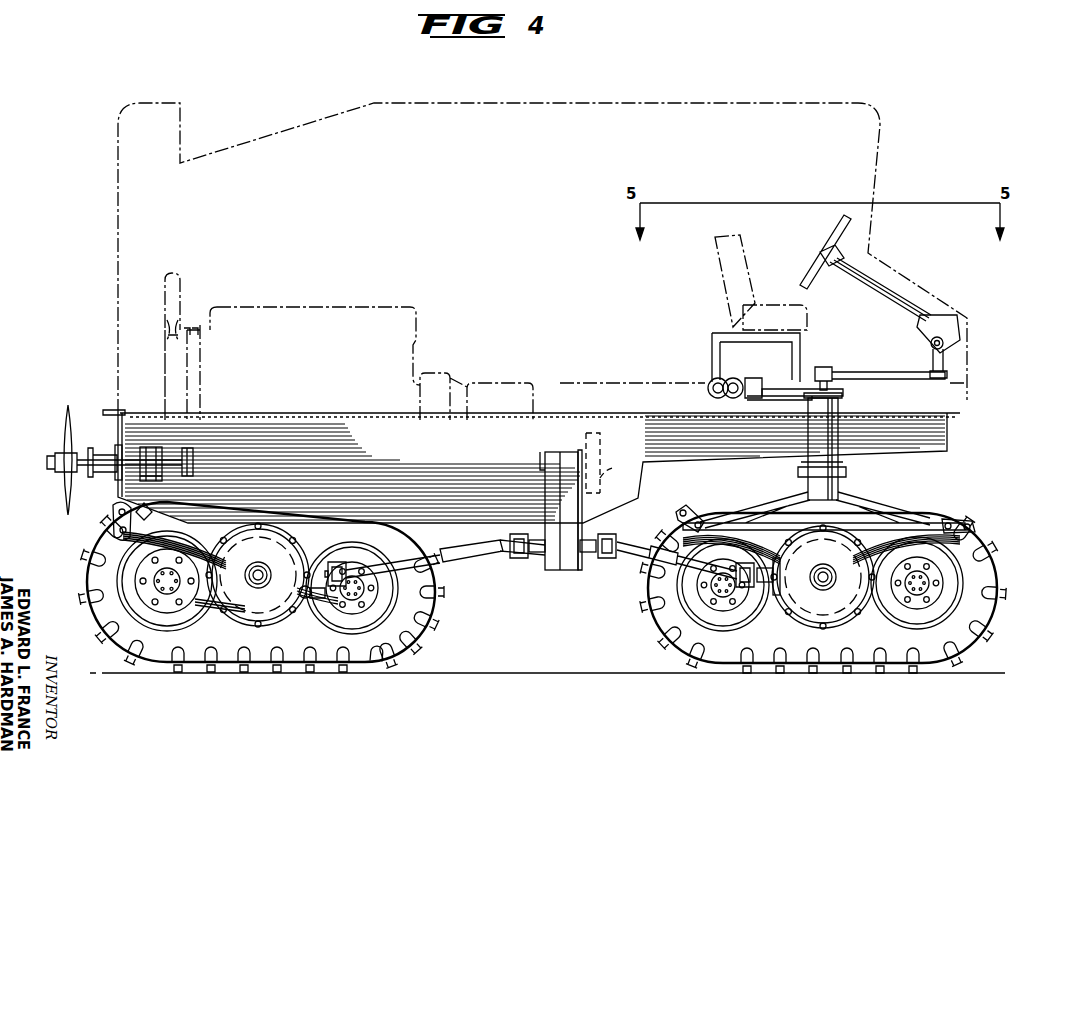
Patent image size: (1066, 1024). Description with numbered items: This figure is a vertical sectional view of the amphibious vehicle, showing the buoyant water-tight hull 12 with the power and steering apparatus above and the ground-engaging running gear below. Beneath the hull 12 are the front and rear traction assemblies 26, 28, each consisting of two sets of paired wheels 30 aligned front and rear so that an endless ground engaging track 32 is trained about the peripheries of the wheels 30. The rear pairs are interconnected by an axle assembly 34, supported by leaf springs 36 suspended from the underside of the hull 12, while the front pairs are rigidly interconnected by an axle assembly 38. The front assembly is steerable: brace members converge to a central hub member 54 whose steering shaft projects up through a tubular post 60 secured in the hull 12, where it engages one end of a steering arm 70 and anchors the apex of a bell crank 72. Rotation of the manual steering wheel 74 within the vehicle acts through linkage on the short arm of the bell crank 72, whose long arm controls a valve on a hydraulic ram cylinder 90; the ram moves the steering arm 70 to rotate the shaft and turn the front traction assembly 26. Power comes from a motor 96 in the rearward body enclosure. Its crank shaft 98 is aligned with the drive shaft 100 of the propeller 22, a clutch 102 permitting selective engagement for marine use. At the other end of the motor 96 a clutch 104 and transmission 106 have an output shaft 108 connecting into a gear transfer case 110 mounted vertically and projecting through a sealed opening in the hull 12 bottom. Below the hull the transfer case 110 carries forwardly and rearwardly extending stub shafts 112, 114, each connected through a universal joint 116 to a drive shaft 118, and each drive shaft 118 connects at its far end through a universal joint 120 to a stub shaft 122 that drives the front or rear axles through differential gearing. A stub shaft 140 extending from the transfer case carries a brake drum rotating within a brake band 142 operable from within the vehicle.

The hull 12 is at (940, 441).
The propeller 22 is at (62, 490).
The front traction assembly 26 is at (854, 585).
The rear traction assembly 28 is at (396, 600).
The wheels 30 is at (400, 643).
The endless ground engaging track 32 is at (88, 611).
The axle assembly 34 is at (258, 578).
The leaf springs 36 is at (100, 538).
The axle assembly 38 is at (815, 598).
The central hub member 54 is at (825, 493).
The tubular post 60 is at (822, 419).
The steering arm 70 is at (777, 398).
The bell crank 72 is at (771, 382).
The manual steering wheel 74 is at (831, 236).
The hydraulic ram cylinder 90 is at (748, 370).
The motor 96 is at (370, 322).
The crank shaft 98 is at (193, 450).
The drive shaft 100 is at (130, 458).
The clutch 102 is at (150, 445).
The clutch 104 is at (440, 380).
The transmission 106 is at (490, 395).
The output shaft 108 is at (542, 455).
The gear transfer case 110 is at (560, 485).
The stub shaft 112 is at (590, 560).
The stub shaft 114 is at (534, 560).
The universal joint 116 is at (516, 560).
The drive shaft 118 is at (494, 553).
The universal joint 120 is at (340, 590).
The stub shaft 122 is at (305, 598).
The stub shaft 140 is at (586, 448).
The brake band 142 is at (610, 463).